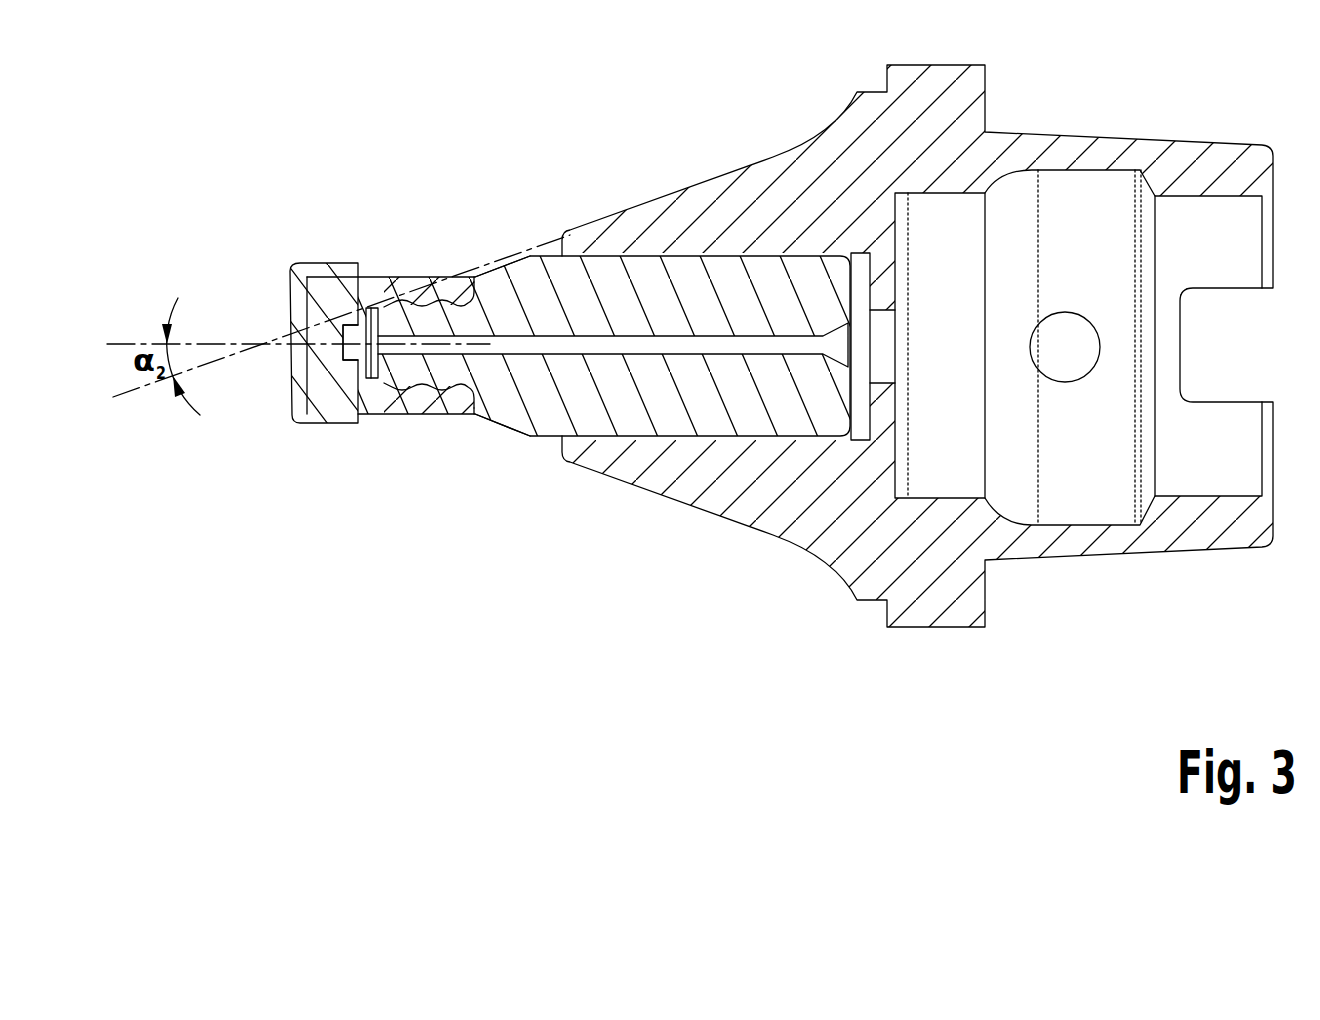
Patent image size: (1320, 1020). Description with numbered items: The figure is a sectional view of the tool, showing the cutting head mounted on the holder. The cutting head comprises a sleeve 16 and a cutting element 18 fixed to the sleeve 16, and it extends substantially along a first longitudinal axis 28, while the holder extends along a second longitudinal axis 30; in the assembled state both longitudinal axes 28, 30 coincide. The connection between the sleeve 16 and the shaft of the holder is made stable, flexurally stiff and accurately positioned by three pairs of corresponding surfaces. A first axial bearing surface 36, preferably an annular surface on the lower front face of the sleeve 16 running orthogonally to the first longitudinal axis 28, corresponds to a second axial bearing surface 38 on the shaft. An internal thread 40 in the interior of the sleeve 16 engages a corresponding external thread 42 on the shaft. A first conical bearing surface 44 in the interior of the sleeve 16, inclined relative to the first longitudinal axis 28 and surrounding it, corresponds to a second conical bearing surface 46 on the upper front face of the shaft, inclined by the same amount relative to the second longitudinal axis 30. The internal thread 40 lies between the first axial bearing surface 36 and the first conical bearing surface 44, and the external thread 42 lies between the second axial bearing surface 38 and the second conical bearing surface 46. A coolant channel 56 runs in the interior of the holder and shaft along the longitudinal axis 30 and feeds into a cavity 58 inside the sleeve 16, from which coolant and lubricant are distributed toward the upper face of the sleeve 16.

The sleeve 16 is at (373, 398).
The cutting element 18 is at (330, 395).
The first longitudinal axis 28 is at (132, 342).
The second longitudinal axis 30 is at (341, 325).
The first axial bearing surface 36 is at (489, 418).
The second axial bearing surface 38 is at (458, 300).
The internal thread 40 is at (447, 395).
The external thread 42 is at (430, 300).
The first conical bearing surface 44 is at (412, 390).
The second conical bearing surface 46 is at (372, 310).
The coolant channel 56 is at (652, 345).
The cavity 58 is at (348, 305).